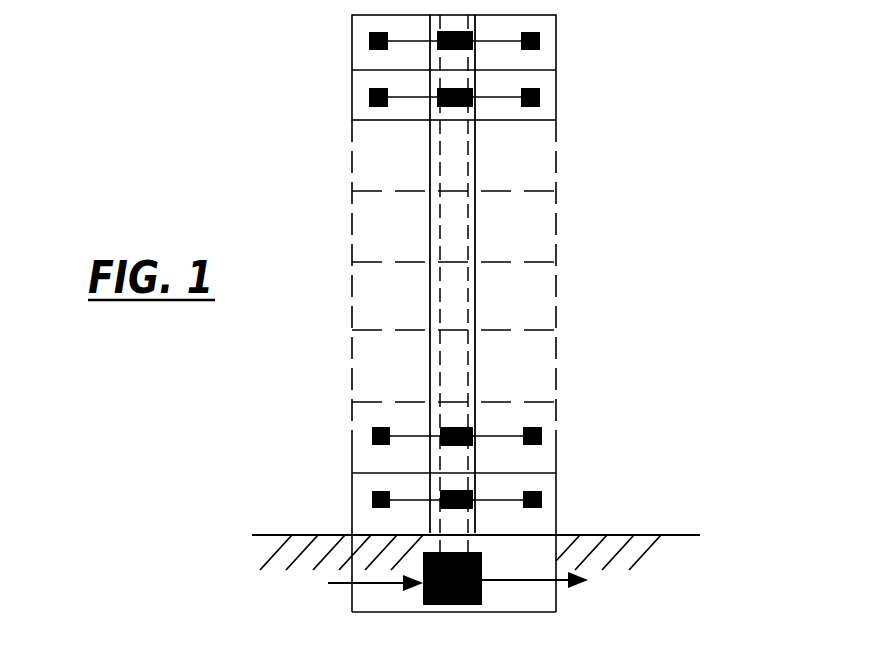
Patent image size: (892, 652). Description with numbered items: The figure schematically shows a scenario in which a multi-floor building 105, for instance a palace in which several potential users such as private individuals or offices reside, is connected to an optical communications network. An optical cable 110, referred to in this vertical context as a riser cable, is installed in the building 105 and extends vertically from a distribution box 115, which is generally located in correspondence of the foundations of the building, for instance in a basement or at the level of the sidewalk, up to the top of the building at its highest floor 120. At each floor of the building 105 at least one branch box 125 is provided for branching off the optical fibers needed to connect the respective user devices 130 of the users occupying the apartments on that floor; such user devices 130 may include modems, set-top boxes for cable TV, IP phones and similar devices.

The multi-floor building 105 is at (352, 217).
The optical cable 110 is at (475, 143).
The distribution box 115 is at (482, 570).
The highest floor 120 is at (338, 43).
The branch box 125 is at (440, 491).
The user devices 130 is at (542, 436).